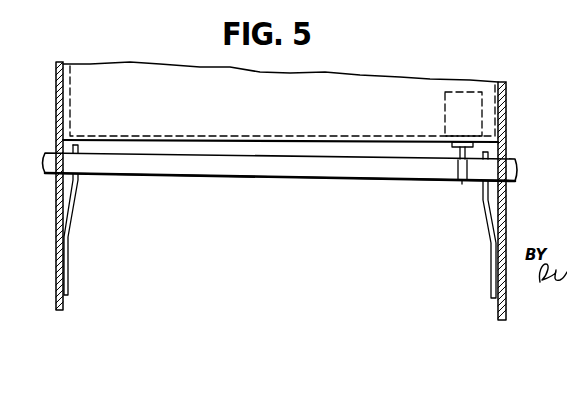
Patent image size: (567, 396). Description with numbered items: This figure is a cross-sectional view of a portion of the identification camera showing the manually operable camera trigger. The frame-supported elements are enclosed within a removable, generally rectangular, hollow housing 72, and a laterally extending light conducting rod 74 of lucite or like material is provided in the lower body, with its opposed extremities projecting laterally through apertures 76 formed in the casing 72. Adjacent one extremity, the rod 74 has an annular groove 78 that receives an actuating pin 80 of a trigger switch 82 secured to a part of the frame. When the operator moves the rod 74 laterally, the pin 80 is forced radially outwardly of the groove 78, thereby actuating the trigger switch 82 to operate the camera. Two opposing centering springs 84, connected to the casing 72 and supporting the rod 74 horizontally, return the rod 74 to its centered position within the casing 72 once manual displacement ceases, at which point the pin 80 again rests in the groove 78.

The housing 72 is at (507, 139).
The light conducting rod 74 is at (262, 168).
The apertures 76 is at (508, 192).
The annular groove 78 is at (463, 184).
The actuating pin 80 is at (452, 145).
The trigger switch 82 is at (468, 122).
The centering springs 84 is at (76, 212).